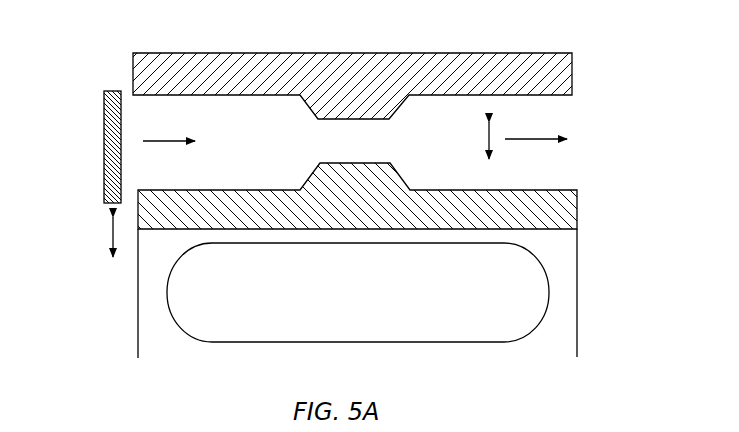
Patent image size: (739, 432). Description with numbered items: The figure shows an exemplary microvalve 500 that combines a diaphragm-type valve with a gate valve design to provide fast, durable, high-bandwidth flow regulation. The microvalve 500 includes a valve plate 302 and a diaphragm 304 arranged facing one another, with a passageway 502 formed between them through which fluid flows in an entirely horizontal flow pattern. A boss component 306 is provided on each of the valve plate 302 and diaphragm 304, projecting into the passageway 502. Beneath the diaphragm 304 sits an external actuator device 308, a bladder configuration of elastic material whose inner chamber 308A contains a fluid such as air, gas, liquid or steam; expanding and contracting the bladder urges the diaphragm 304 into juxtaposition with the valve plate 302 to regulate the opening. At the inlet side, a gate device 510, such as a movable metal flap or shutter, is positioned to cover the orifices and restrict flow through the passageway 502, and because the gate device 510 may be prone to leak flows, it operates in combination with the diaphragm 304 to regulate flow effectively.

The microvalve 500 is at (80, 70).
The passageway 502 is at (262, 159).
The valve plate 302 is at (563, 73).
The diaphragm 304 is at (562, 208).
The boss component 306 is at (393, 107).
The external actuator device 308 is at (549, 293).
The inner chamber 308A is at (180, 297).
The gate device 510 is at (110, 124).